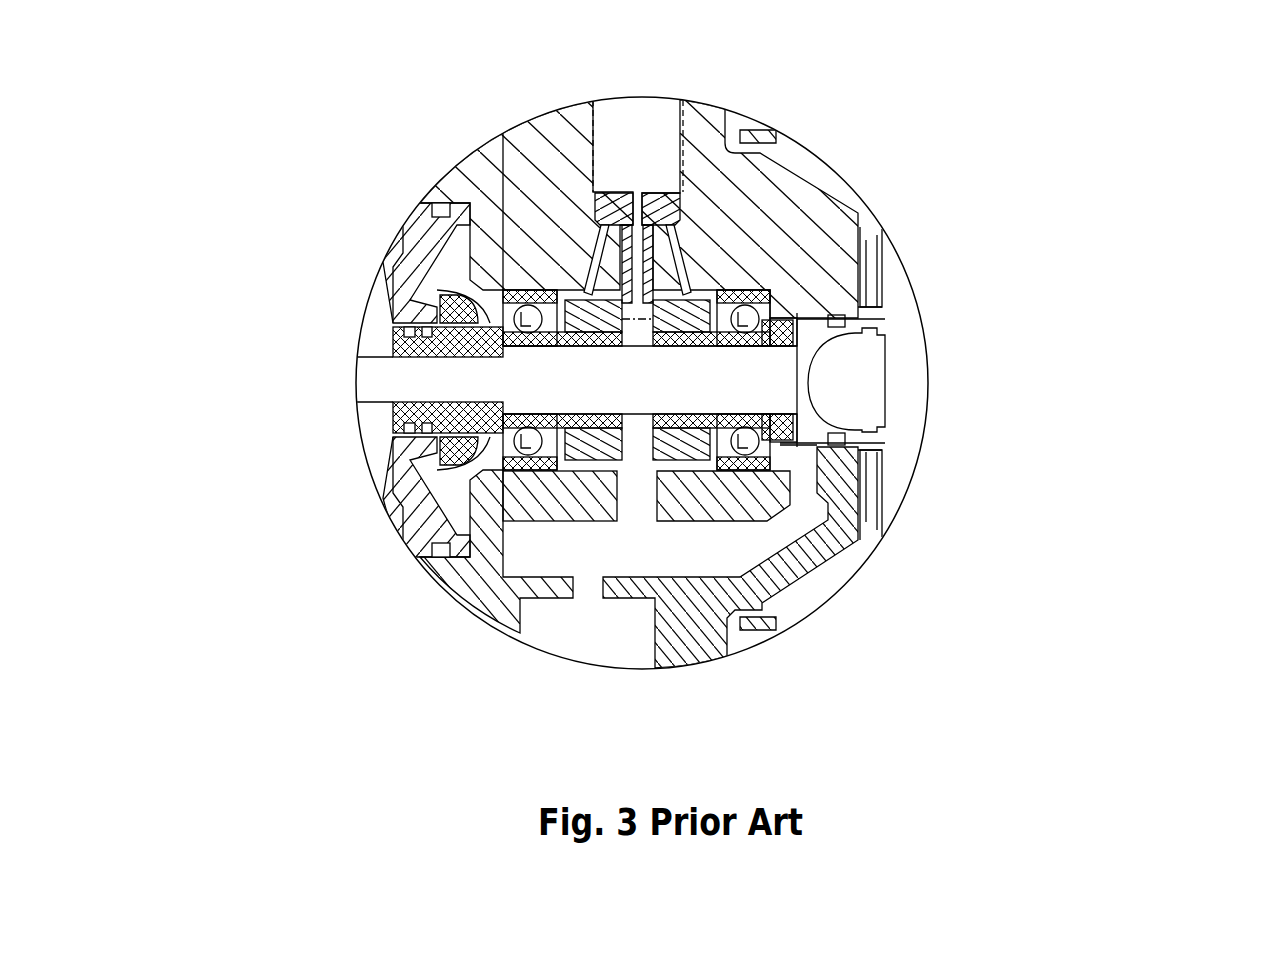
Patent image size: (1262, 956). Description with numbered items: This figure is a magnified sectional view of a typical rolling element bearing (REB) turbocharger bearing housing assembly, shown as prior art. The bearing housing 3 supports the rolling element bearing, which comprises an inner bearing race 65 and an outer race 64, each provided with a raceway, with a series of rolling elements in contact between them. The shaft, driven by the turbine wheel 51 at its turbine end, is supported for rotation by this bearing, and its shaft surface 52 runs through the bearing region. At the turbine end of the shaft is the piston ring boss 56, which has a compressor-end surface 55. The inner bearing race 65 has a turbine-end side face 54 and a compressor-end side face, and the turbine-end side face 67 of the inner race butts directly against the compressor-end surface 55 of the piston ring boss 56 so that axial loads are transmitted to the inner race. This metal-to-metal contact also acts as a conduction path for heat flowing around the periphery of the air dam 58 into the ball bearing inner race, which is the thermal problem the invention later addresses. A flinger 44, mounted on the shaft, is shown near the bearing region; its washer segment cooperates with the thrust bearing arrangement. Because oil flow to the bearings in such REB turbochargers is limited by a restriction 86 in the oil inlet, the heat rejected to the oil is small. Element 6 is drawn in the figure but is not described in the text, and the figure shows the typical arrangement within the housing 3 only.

The bearing housing 3 is at (770, 200).
The pump housing 6 is at (475, 190).
The flinger 44 is at (443, 293).
The turbine wheel 51 is at (893, 320).
The shaft surface 52 is at (592, 346).
The turbine-end side face 54 is at (842, 328).
The compressor-end surface 55 is at (790, 425).
The piston ring boss 56 is at (815, 317).
The air dam 58 is at (862, 356).
The outer race 64 is at (740, 490).
The inner bearing race 65 is at (760, 415).
The turbine-end side face 67 is at (857, 537).
The restriction 86 is at (660, 207).